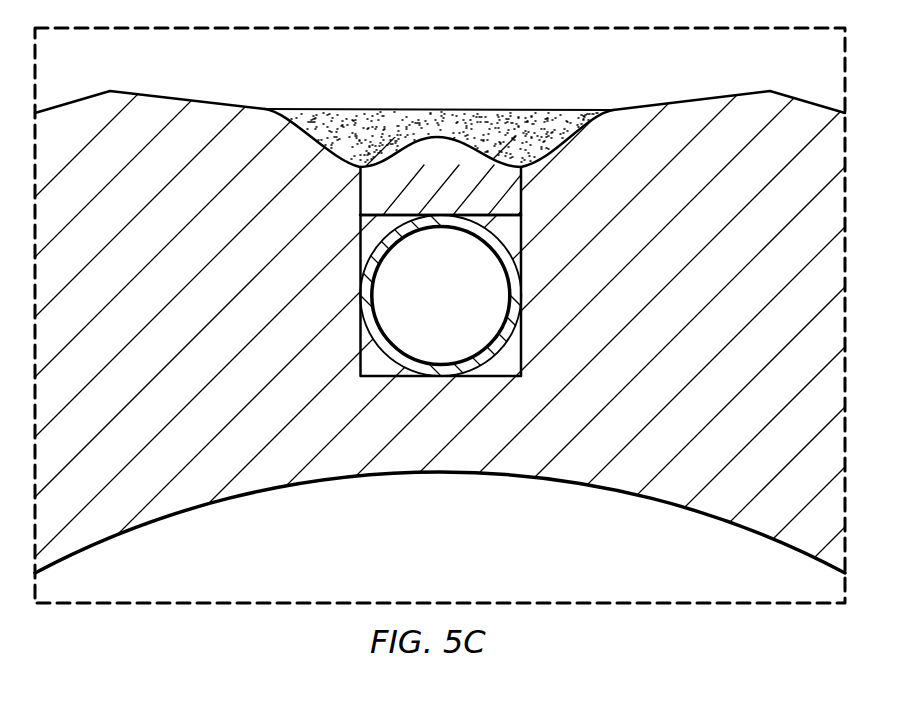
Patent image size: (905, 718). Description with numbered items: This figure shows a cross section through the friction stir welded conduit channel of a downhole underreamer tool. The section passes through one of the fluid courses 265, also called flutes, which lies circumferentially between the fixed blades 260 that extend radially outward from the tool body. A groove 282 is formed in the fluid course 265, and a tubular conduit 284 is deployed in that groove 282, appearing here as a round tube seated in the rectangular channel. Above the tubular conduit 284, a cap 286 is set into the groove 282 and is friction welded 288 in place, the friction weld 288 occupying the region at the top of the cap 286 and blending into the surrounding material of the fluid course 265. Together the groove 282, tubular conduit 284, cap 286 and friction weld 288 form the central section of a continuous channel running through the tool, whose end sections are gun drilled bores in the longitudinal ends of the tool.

The fixed blade 260 is at (93, 97).
The fluid course 265 is at (215, 104).
The friction weld 288 is at (530, 122).
The cap 286 is at (381, 193).
The tubular conduit 284 is at (489, 239).
The groove 282 is at (357, 358).